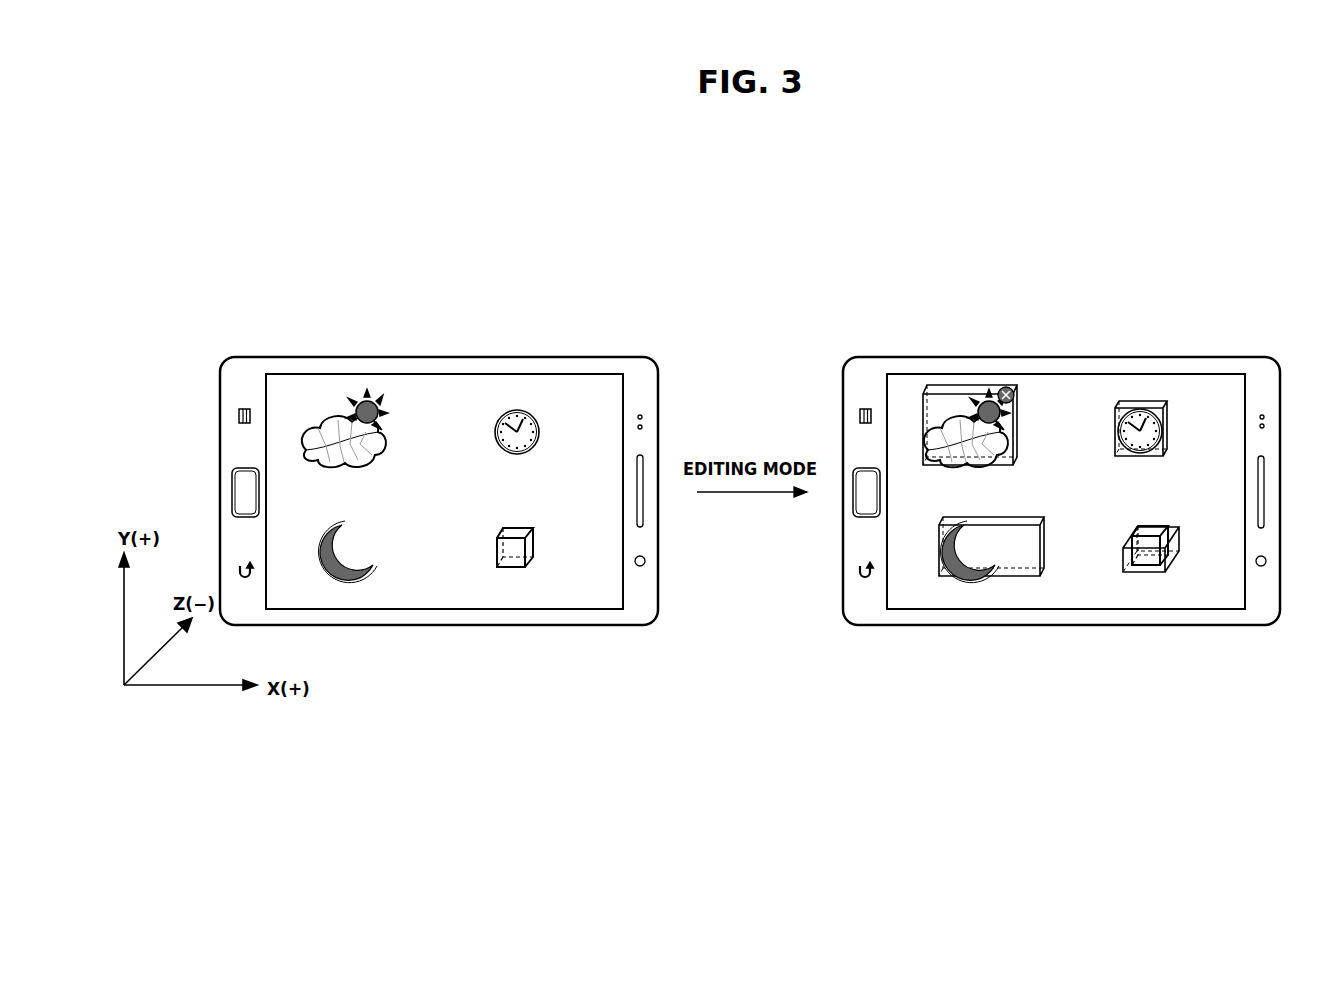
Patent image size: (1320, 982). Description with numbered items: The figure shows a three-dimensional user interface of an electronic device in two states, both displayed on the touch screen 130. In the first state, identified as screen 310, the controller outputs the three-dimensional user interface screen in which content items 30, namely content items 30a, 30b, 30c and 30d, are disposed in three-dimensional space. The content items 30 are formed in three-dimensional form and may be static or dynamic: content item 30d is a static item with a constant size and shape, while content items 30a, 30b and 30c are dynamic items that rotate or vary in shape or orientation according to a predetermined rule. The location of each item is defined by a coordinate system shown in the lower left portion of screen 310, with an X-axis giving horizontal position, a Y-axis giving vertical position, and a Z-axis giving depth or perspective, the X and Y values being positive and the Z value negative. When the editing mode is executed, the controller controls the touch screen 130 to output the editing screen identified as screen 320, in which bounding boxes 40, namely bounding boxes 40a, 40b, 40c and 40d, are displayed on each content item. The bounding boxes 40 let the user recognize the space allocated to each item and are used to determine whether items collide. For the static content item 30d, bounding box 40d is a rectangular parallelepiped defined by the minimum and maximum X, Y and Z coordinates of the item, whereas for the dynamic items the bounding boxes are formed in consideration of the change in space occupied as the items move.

The content items 30 is at (340, 302).
The content item 30a is at (334, 414).
The content item 30b is at (362, 562).
The content item 30c is at (500, 541).
The content item 30d is at (522, 403).
The screen 310 is at (608, 354).
The screen 320 is at (1220, 354).
The touch screen 130 is at (423, 610).
The bounding boxes 40 is at (975, 305).
The bounding box 40a is at (982, 388).
The bounding box 40b is at (1033, 520).
The bounding box 40c is at (1127, 545).
The bounding box 40d is at (1153, 405).